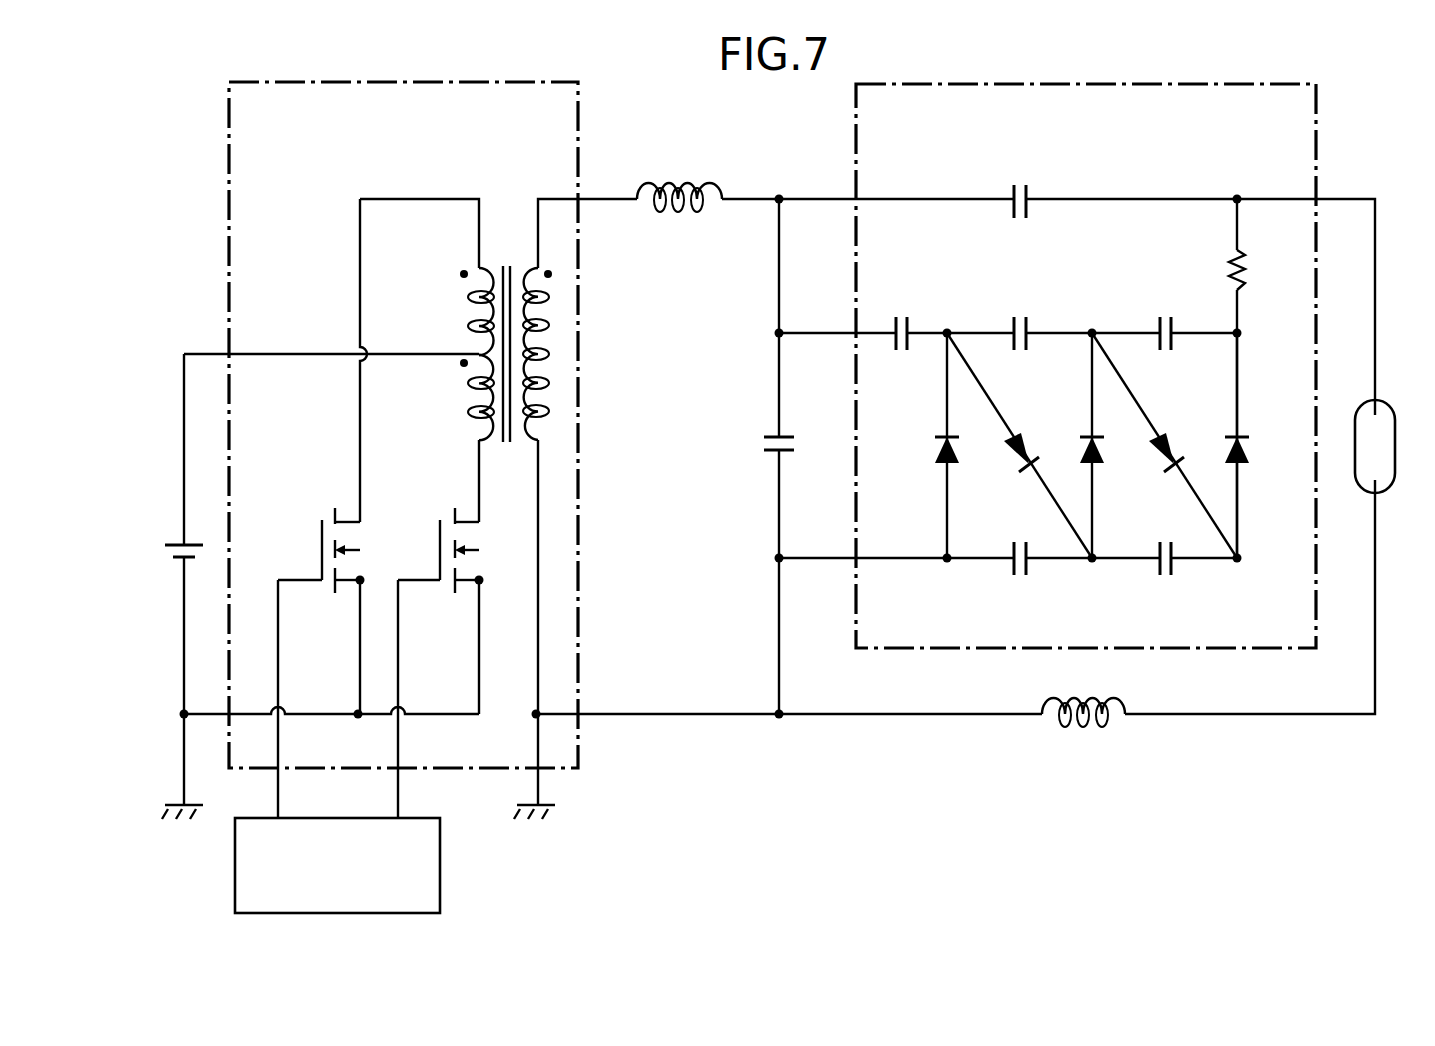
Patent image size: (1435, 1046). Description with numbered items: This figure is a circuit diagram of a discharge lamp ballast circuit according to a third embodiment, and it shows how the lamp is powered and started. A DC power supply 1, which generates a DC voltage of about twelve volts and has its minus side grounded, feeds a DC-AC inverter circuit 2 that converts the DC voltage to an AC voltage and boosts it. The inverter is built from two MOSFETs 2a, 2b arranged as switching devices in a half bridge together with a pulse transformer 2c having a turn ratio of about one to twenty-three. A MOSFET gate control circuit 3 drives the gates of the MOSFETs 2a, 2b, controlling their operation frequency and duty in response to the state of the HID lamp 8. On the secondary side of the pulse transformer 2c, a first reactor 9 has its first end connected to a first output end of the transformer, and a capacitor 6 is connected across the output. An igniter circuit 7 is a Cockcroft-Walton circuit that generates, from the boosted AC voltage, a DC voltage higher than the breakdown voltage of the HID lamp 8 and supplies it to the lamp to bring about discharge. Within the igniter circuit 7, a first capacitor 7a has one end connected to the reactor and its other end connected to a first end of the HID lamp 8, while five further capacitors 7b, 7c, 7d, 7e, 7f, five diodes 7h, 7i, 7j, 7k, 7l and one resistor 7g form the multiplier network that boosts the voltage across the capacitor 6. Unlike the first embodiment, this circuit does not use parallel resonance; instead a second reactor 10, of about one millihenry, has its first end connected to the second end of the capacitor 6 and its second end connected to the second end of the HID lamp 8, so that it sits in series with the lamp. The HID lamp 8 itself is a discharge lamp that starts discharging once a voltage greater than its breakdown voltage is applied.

The DC power supply 1 is at (160, 556).
The DC-AC inverter circuit 2 is at (403, 80).
The MOSFET 2a is at (313, 523).
The MOSFET 2b is at (433, 523).
The pulse transformer 2c is at (456, 400).
The MOSFET gate control circuit 3 is at (441, 870).
The capacitor Cp 6 is at (751, 452).
The igniter circuit 7 is at (1087, 80).
The capacitor Cs 7a is at (1019, 176).
The capacitor Cc1 7b is at (900, 306).
The capacitor Cc2 7c is at (1019, 306).
The capacitor Cc3 7d is at (1164, 306).
The capacitor Cc4 7e is at (1018, 589).
The capacitor Cc5 7f is at (1164, 589).
The resistor Rc 7g is at (1251, 282).
The diode D1 7h is at (934, 456).
The diode D2 7i is at (1012, 456).
The diode D3 7j is at (1099, 456).
The diode D4 7k is at (1151, 448).
The diode D5 7l is at (1244, 456).
The HID lamp 8 is at (1391, 404).
The reactor Ls1 9 is at (678, 174).
The reactor Ls2 10 is at (1083, 736).